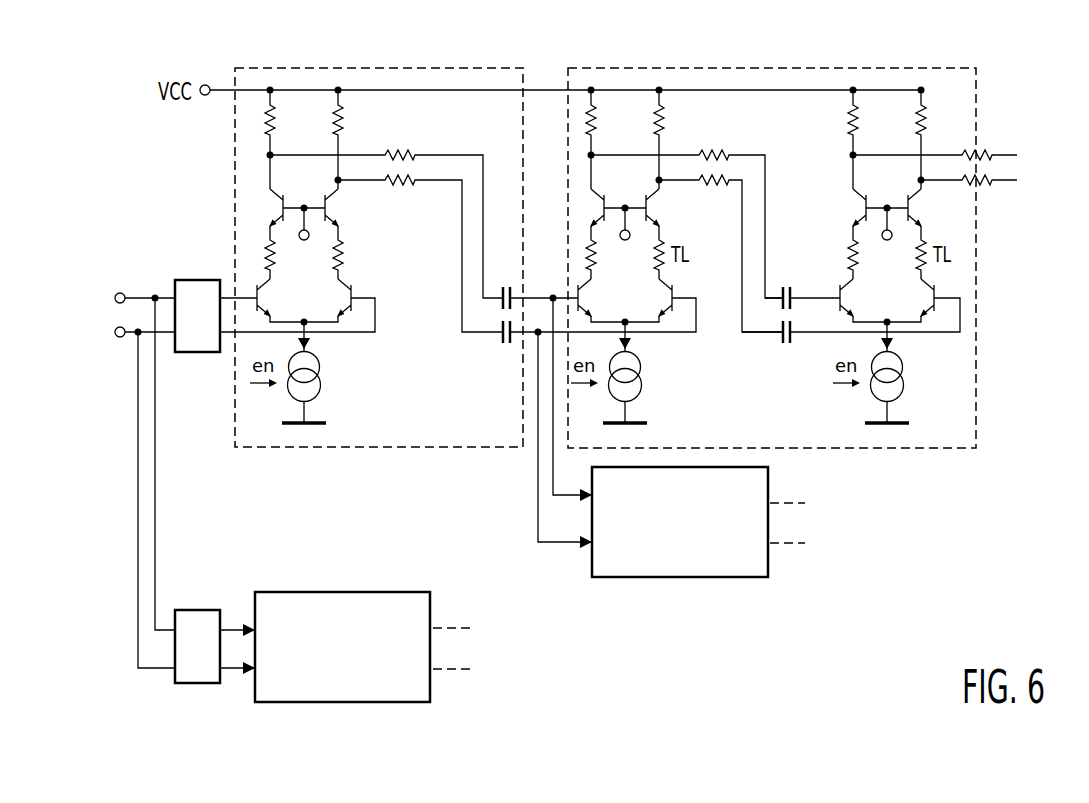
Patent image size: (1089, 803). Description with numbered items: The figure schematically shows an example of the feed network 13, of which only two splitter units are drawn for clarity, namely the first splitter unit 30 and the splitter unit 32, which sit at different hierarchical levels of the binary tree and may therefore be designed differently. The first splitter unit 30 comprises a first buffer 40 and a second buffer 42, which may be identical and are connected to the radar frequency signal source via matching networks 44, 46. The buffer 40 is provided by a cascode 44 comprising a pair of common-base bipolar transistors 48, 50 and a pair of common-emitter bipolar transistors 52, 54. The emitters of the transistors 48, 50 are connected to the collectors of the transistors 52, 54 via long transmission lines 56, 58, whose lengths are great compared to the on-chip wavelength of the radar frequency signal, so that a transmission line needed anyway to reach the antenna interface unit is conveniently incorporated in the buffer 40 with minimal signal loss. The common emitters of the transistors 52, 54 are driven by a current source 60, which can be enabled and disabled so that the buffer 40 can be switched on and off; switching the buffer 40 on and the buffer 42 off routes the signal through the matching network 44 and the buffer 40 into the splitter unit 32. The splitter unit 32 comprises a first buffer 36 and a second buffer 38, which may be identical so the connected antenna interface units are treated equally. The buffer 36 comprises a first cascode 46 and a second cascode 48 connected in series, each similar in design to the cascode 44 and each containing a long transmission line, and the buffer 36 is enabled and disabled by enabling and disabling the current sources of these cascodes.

The feed network 13 is at (177, 237).
The first splitter unit 30 is at (345, 575).
The splitter unit 32 is at (880, 448).
The first buffer 36 is at (976, 425).
The second buffer 38 is at (680, 577).
The first buffer 40 is at (377, 448).
The second buffer 42 is at (405, 592).
The matching network / cascode 44 is at (349, 264).
The matching network / first cascode 46 is at (575, 355).
The common-base bipolar transistor / second cascode 48 is at (896, 48).
The common-base bipolar transistor 50 is at (335, 196).
The common-emitter bipolar transistor 52 is at (266, 286).
The common-emitter bipolar transistor 54 is at (355, 290).
The long transmission line 56 is at (266, 240).
The long transmission line 58 is at (347, 238).
The current source 60 is at (323, 382).